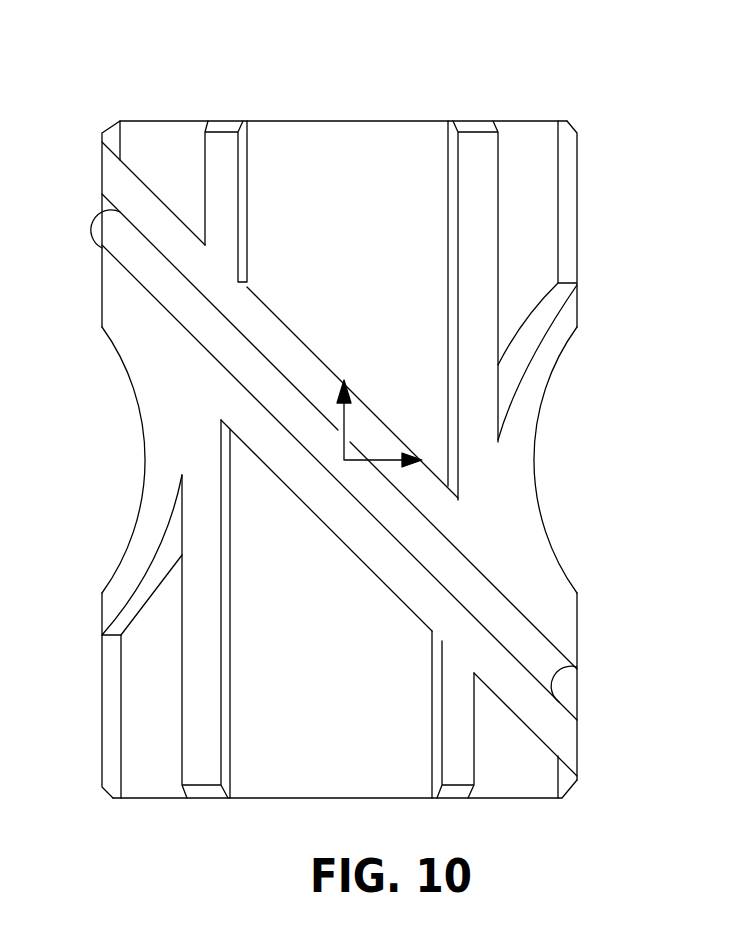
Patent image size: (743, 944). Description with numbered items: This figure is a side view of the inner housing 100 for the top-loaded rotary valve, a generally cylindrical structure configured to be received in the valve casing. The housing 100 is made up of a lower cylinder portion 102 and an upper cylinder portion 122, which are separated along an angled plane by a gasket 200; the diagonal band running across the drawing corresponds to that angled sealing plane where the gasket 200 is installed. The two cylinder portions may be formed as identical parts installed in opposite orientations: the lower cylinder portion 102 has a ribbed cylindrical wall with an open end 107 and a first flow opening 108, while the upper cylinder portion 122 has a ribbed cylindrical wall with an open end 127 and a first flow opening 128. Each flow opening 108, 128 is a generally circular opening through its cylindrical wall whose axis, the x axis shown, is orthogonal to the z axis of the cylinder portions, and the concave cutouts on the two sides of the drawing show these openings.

The inner housing 100 is at (456, 66).
The lower cylinder portion 102 is at (270, 797).
The open end 107 is at (600, 703).
The first flow opening 108 is at (130, 477).
The upper cylinder portion 122 is at (254, 120).
The open end 127 is at (84, 214).
The first flow opening 128 is at (558, 478).
The gasket 200 is at (591, 687).